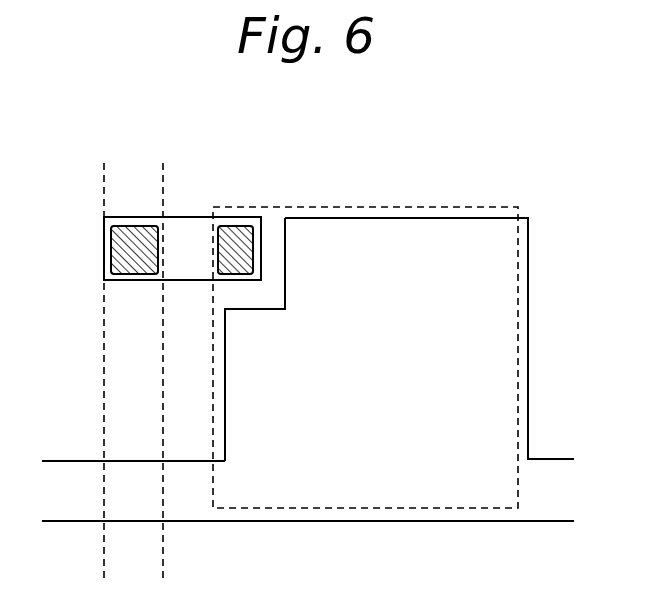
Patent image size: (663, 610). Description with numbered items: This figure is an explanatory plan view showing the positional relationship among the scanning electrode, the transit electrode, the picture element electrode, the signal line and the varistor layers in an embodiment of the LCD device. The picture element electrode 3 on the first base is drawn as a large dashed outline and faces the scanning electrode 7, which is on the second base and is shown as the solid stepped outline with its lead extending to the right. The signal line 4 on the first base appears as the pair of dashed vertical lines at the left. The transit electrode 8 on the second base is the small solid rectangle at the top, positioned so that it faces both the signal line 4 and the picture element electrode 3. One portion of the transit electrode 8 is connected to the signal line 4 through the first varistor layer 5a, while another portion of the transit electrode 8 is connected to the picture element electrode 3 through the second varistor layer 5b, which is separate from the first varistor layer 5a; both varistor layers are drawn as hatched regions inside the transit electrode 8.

The picture element electrode 3 is at (447, 207).
The signal line 4 is at (129, 190).
The first varistor layer 5a is at (145, 230).
The second varistor layer 5b is at (240, 230).
The scanning electrode 7 is at (555, 485).
The transit electrode 8 is at (188, 230).